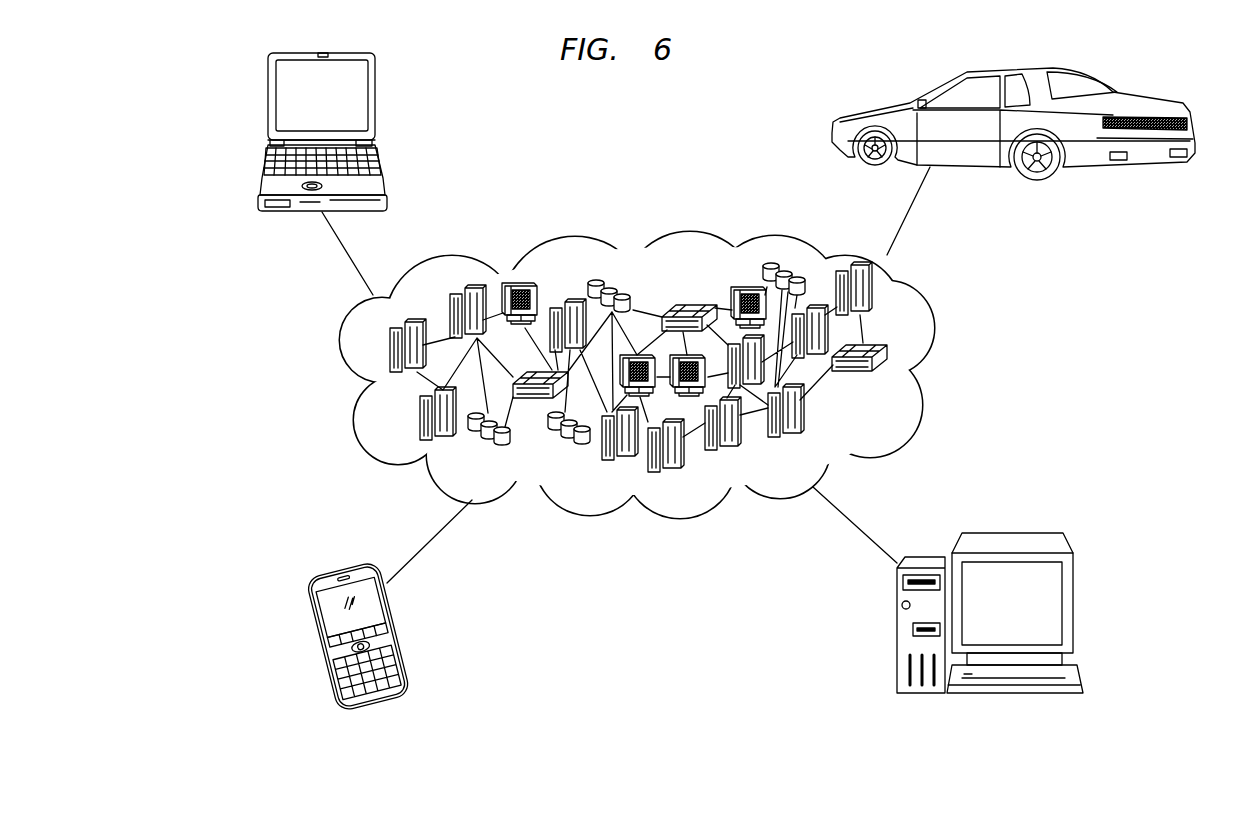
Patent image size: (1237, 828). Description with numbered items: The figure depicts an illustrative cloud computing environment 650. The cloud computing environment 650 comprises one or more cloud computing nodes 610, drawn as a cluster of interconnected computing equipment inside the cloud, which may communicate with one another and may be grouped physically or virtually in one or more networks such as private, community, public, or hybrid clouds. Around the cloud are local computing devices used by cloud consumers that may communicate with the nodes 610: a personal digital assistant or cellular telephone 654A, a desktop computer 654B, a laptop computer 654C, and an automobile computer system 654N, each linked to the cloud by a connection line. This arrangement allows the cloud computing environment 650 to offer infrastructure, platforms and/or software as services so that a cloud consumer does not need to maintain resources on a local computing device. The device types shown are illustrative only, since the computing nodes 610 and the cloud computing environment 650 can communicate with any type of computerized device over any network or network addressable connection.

The cloud computing nodes 610 is at (893, 380).
The cloud computing environment 650 is at (925, 312).
The personal digital assistant (PDA) or cellular telephone 654A is at (310, 625).
The desktop computer 654B is at (1013, 533).
The laptop computer 654C is at (268, 88).
The automobile computer system 654N is at (1160, 104).